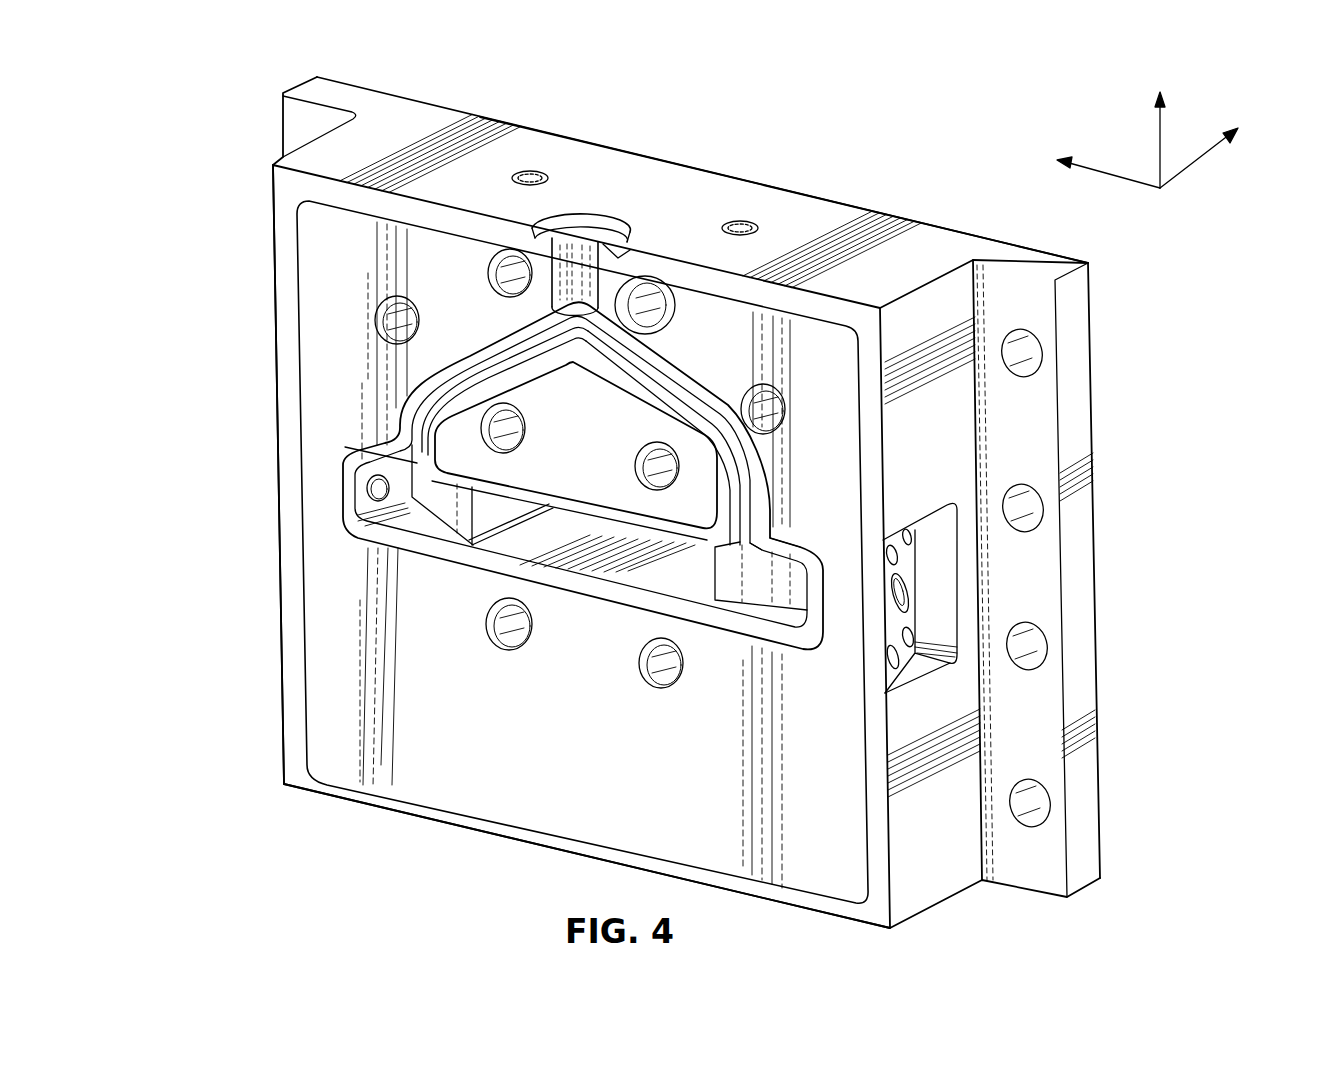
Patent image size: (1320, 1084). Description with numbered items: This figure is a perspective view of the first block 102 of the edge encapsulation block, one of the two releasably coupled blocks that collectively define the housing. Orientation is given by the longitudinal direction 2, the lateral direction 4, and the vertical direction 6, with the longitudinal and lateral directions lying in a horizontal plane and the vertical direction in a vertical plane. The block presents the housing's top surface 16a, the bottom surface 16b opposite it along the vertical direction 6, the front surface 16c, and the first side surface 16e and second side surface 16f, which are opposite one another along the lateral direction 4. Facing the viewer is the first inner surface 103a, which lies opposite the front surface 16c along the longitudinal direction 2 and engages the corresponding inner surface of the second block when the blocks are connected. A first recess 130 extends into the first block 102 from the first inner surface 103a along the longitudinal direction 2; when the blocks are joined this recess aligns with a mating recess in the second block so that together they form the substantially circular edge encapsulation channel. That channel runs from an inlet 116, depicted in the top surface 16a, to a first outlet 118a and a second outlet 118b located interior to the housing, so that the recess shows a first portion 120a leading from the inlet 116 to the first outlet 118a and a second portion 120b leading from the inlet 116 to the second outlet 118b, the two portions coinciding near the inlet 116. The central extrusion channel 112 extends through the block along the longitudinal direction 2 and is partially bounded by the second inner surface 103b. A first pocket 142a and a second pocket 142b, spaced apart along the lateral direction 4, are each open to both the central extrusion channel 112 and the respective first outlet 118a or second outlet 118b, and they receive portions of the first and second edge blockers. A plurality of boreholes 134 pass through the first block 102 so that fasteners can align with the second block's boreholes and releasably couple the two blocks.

The first block 102 is at (297, 112).
The top surface 16a is at (710, 212).
The bottom surface 16b is at (427, 821).
The front surface 16c is at (910, 218).
The first side surface 16e is at (272, 275).
The second side surface 16f is at (935, 410).
The first inner surface 103a is at (676, 823).
The second inner surface 103b is at (495, 515).
The first recess 130 is at (550, 333).
The first portion of the edge encapsulation channel 120a is at (469, 360).
The second portion of the edge encapsulation channel 120b is at (655, 383).
The inlet 116 is at (587, 240).
The central extrusion channel 112 is at (530, 547).
The first outlet 118a is at (360, 448).
The second outlet 118b is at (750, 533).
The first pocket 142a is at (437, 512).
The second pocket 142b is at (745, 598).
The boreholes 134 is at (656, 672).
The longitudinal direction 2 is at (1199, 158).
The lateral direction 4 is at (1108, 179).
The vertical direction 6 is at (1167, 140).